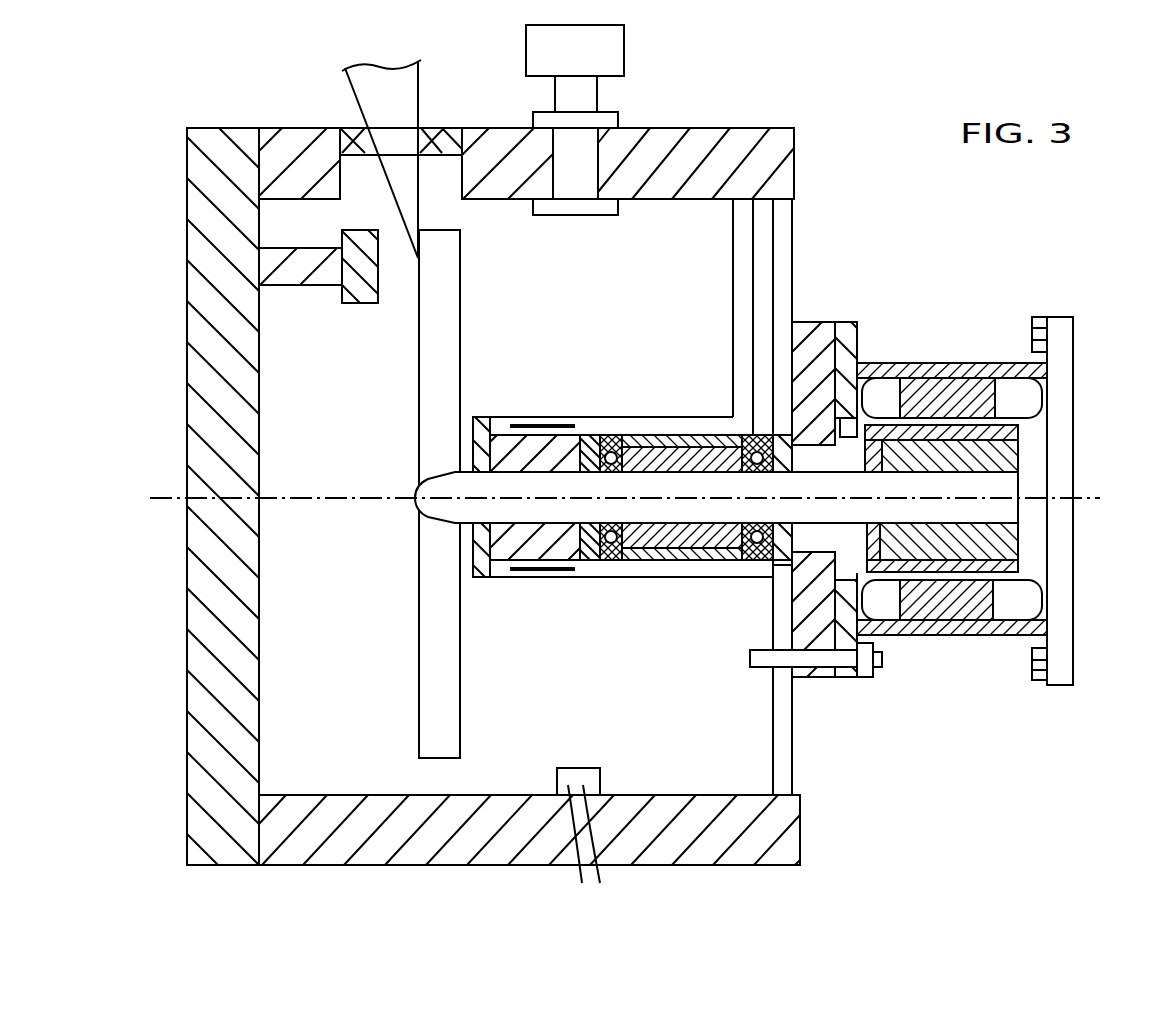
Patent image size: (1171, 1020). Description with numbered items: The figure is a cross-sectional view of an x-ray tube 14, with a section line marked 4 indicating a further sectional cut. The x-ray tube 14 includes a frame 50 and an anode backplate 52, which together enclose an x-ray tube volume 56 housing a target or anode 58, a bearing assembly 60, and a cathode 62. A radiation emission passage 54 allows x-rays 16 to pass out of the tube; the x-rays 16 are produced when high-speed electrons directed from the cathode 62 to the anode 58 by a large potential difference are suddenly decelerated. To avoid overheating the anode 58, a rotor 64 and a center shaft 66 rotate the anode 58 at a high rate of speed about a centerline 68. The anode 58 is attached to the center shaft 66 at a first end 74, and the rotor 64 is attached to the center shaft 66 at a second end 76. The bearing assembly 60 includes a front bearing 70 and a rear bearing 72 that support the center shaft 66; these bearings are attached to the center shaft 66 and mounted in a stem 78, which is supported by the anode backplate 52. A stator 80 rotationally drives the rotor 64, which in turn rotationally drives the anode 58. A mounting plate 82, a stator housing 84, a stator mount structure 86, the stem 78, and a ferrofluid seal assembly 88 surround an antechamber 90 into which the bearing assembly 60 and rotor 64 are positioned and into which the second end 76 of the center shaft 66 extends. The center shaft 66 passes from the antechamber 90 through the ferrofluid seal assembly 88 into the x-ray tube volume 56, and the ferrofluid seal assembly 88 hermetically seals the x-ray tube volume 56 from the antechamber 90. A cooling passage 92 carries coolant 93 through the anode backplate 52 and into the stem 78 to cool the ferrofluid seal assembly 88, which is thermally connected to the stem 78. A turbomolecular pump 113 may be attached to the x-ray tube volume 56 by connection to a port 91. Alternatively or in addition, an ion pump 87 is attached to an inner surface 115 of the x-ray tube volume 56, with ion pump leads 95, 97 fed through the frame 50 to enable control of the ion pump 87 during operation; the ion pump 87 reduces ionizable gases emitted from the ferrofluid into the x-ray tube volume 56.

The x-ray tube 14 is at (1046, 214).
The x-rays 16 is at (402, 92).
The frame 50 is at (655, 145).
The anode backplate 52 is at (728, 233).
The radiation emission passage 54 is at (363, 132).
The x-ray tube volume 56 is at (498, 232).
The anode 58 is at (428, 397).
The bearing assembly 60 is at (652, 564).
The cathode 62 is at (365, 295).
The rotor 64 is at (1005, 540).
The center shaft 66 is at (706, 562).
The centerline 68 is at (1088, 505).
The front bearing 70 is at (612, 562).
The rear bearing 72 is at (770, 440).
The first end 74 is at (368, 522).
The second end 76 is at (1075, 478).
The stem 78 is at (652, 418).
The stator 80 is at (1033, 397).
The mounting plate 82 is at (1062, 655).
The stator housing 84 is at (947, 363).
The stator mount structure 86 is at (800, 677).
The ion pump 87 is at (582, 768).
The ferrofluid seal assembly 88 is at (500, 560).
The antechamber 90 is at (1038, 558).
The port 91 is at (578, 210).
The cooling passage 92 is at (752, 271).
The coolant 93 is at (752, 318).
The ion pump lead 95 is at (582, 870).
The ion pump lead 97 is at (600, 872).
The turbomolecular pump 113 is at (620, 36).
The inner surface 115 is at (540, 795).
The section line 4- 4 is at (510, 655).